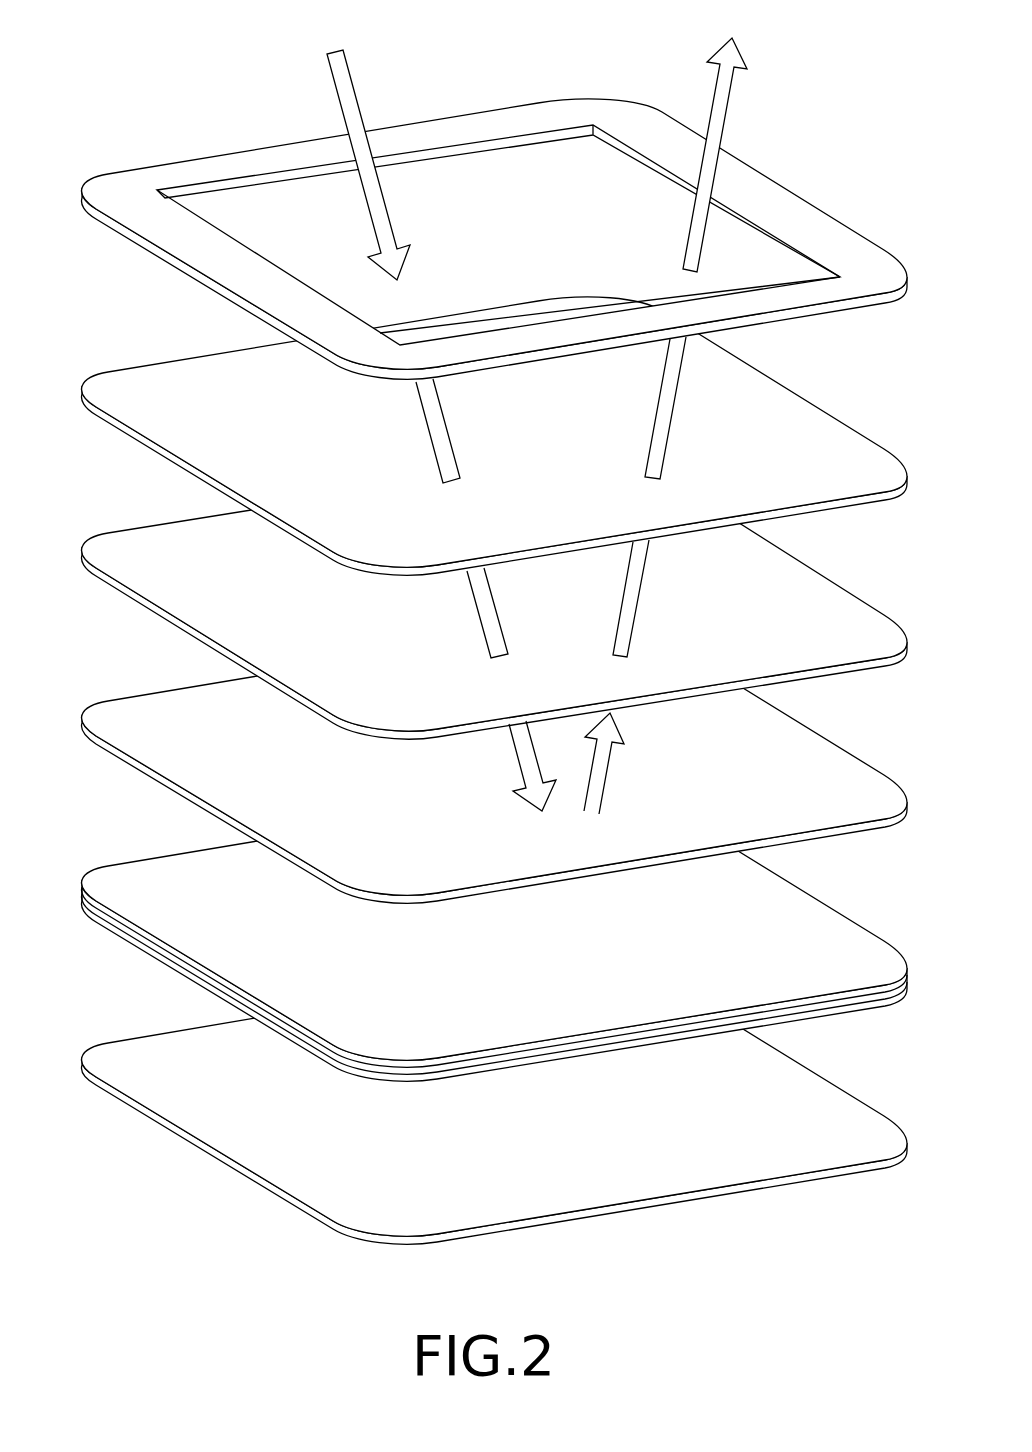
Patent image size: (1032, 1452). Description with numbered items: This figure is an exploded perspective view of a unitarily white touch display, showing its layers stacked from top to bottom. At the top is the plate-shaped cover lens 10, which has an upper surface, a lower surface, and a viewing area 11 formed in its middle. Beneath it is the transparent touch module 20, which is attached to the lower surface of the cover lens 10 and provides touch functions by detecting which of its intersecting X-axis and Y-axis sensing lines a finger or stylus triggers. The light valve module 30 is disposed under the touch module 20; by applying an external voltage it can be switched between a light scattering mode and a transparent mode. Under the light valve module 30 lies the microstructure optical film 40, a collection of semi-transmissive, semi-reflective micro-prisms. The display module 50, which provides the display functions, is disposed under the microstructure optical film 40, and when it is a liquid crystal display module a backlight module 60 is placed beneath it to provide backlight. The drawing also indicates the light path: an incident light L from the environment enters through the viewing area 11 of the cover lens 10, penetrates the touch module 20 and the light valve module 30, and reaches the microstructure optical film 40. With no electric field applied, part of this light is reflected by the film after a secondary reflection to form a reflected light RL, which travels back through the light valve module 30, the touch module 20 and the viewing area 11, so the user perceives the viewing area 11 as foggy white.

The cover lens 10 is at (152, 147).
The viewing area 11 is at (533, 243).
The touch module 20 is at (143, 387).
The light valve module 30 is at (143, 549).
The microstructure optical film 40 is at (143, 716).
The display module 50 is at (116, 870).
The backlight module 60 is at (143, 1053).
The incident light L is at (347, 90).
The reflected light RL is at (720, 103).